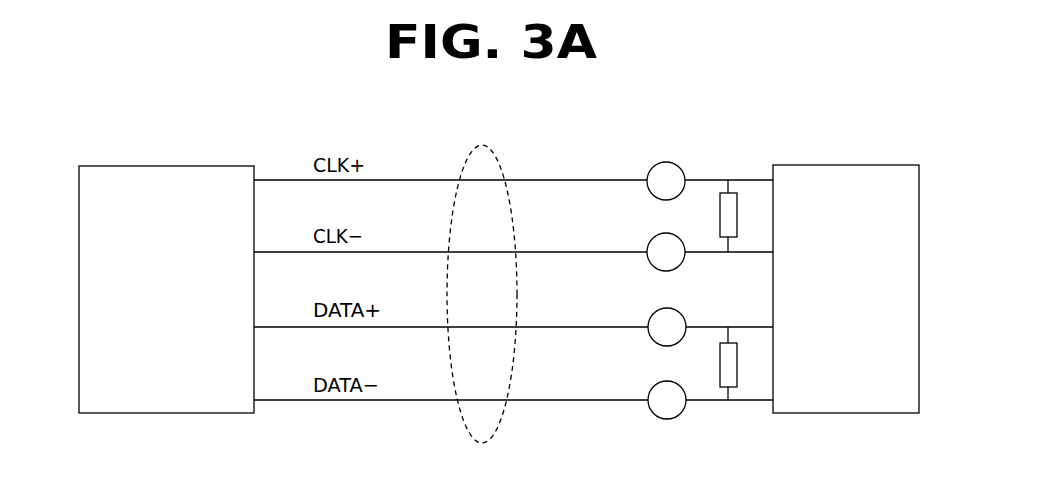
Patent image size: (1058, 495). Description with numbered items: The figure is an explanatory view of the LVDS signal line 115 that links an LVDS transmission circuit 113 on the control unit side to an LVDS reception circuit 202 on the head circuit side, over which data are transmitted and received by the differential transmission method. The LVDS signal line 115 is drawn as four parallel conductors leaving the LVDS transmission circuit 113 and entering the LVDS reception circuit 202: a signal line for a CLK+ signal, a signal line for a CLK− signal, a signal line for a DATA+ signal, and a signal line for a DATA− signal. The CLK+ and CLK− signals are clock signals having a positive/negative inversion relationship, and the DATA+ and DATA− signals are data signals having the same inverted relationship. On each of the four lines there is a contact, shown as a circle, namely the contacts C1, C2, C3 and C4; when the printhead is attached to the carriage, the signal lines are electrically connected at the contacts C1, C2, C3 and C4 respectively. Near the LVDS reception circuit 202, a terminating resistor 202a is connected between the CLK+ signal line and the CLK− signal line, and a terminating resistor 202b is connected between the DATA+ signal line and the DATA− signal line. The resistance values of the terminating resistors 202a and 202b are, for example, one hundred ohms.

The LVDS transmission circuit 113 is at (163, 166).
The LVDS signal line 115 is at (483, 145).
The LVDS reception circuit 202 is at (843, 165).
The terminating resistor 202a is at (720, 215).
The terminating resistor 202b is at (720, 364).
The contact C1 is at (665, 162).
The contact C2 is at (652, 266).
The contact C3 is at (683, 313).
The contact C4 is at (652, 414).